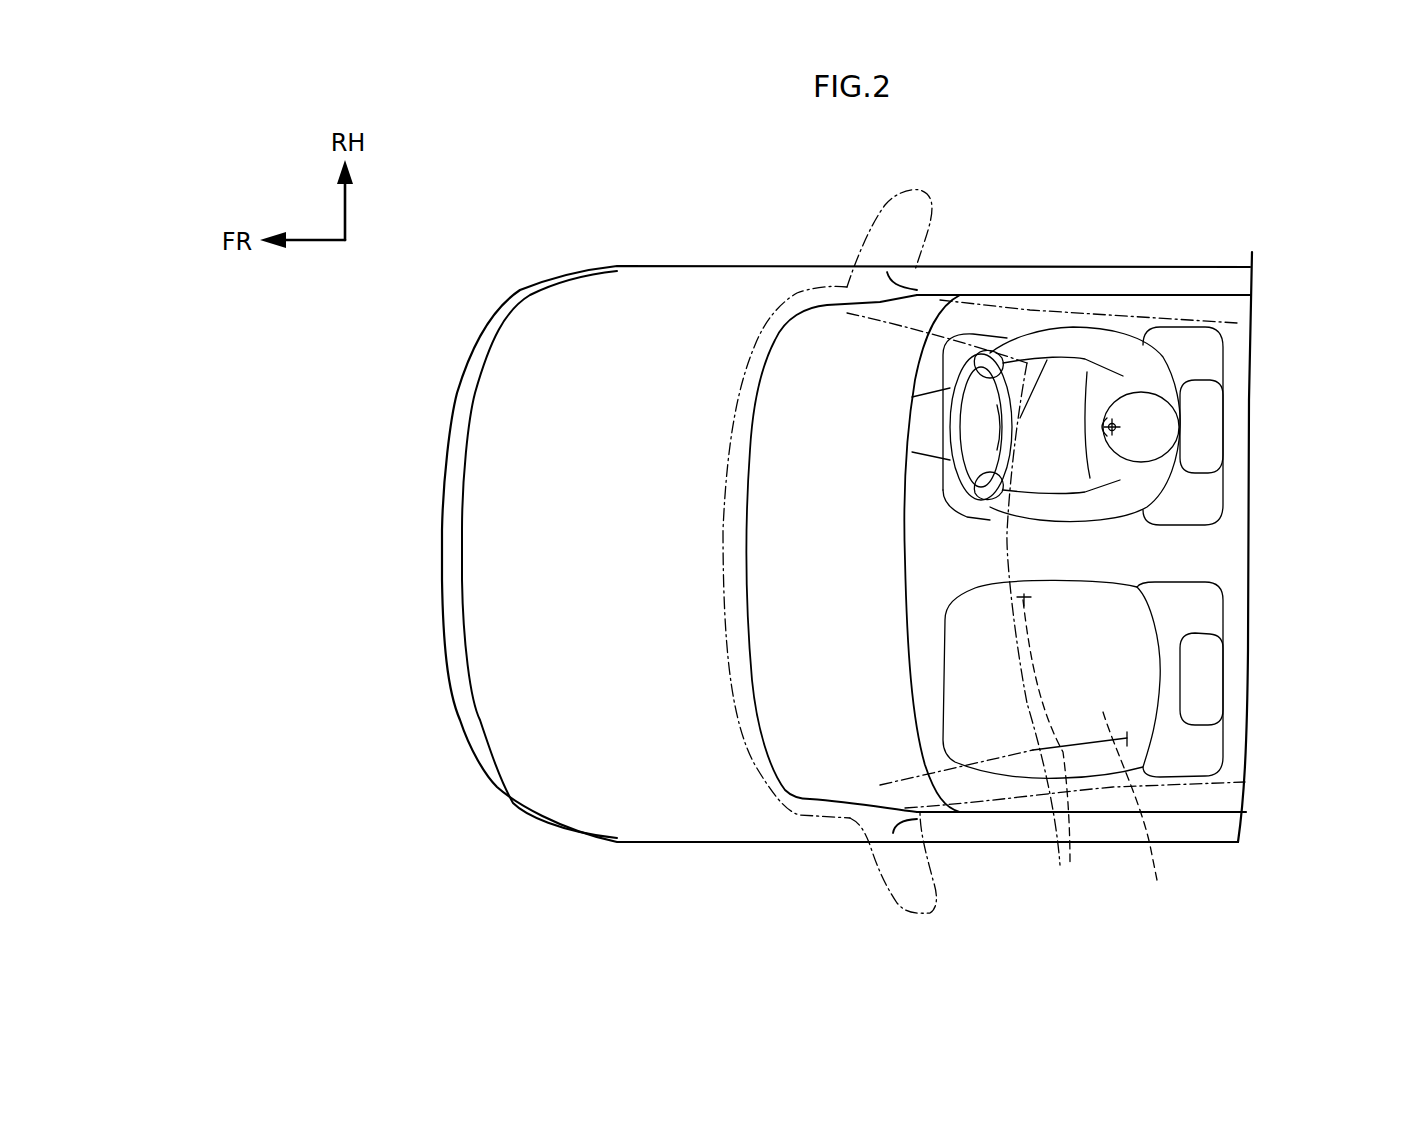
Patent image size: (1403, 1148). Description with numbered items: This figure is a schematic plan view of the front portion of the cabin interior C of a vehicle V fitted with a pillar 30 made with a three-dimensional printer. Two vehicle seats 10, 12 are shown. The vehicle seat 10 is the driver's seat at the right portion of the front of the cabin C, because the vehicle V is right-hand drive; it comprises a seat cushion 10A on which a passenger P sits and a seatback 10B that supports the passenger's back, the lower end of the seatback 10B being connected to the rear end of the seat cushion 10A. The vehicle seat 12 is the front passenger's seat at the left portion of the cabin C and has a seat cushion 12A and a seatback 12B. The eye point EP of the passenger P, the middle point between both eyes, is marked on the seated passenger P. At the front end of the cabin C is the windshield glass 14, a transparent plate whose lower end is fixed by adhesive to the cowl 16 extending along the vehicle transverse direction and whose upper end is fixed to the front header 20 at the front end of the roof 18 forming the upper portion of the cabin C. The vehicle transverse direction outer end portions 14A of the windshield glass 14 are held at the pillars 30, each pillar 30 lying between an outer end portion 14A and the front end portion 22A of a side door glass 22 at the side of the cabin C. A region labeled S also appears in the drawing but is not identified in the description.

The vehicle V is at (1207, 262).
The vehicle seat 10 is at (1131, 447).
The seat cushion 10A is at (967, 521).
The seatback 10B is at (1225, 496).
The vehicle seat 12 is at (1145, 673).
The seat cushion 12A is at (1072, 582).
The seatback 12B is at (1225, 623).
The windshield glass 14 is at (808, 773).
The vehicle transverse direction outer end portion 14A is at (880, 322).
The cowl 16 is at (723, 537).
The roof 18 is at (1138, 812).
The front header 20 is at (1043, 629).
The side door glass 22 is at (1117, 305).
The front end portion 22A is at (1007, 303).
The pillar 30 is at (965, 310).
The front pillar space S is at (1002, 275).
The passenger P is at (1172, 366).
The eye point EP is at (1116, 426).
The cabin C is at (1213, 545).